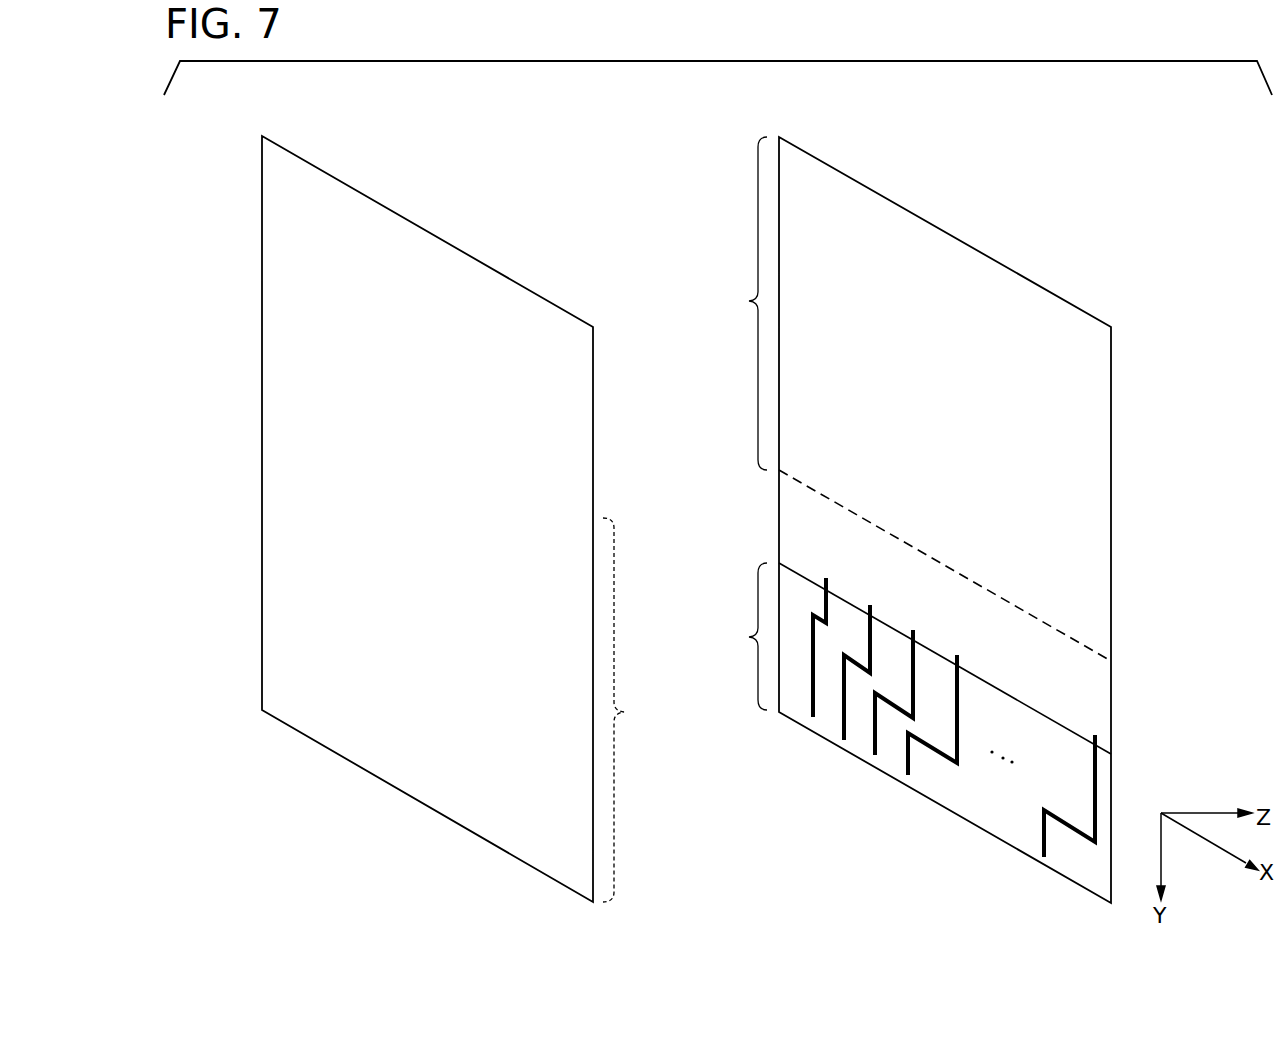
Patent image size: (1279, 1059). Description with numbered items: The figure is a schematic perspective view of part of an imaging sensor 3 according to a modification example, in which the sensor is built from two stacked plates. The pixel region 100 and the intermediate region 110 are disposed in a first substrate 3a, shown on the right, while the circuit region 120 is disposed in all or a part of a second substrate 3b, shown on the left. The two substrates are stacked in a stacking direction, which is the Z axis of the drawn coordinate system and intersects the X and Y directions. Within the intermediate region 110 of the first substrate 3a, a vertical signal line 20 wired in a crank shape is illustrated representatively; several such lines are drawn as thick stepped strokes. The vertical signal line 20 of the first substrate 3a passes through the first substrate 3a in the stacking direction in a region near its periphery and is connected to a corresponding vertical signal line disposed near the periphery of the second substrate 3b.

The imaging sensor 3 is at (686, 494).
The first substrate 3a is at (906, 494).
The second substrate 3b is at (472, 494).
The vertical signal line 20 is at (933, 749).
The pixel region 100 is at (734, 303).
The intermediate region 110 is at (734, 636).
The circuit region 120 is at (643, 710).